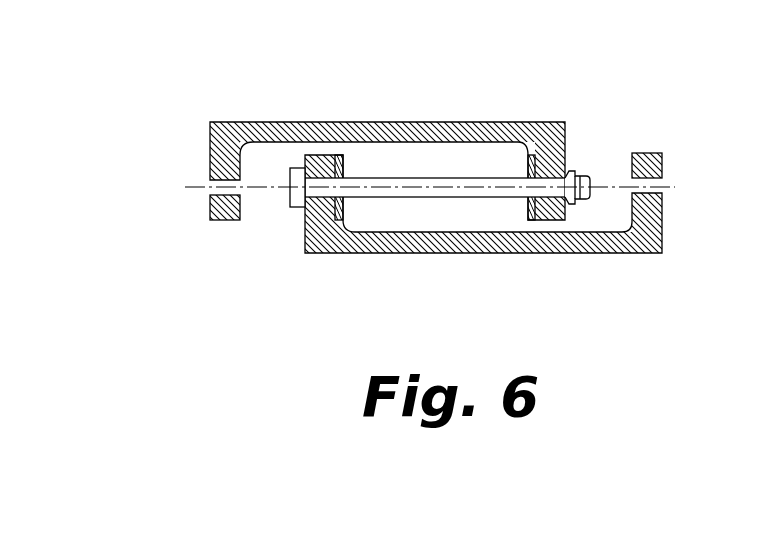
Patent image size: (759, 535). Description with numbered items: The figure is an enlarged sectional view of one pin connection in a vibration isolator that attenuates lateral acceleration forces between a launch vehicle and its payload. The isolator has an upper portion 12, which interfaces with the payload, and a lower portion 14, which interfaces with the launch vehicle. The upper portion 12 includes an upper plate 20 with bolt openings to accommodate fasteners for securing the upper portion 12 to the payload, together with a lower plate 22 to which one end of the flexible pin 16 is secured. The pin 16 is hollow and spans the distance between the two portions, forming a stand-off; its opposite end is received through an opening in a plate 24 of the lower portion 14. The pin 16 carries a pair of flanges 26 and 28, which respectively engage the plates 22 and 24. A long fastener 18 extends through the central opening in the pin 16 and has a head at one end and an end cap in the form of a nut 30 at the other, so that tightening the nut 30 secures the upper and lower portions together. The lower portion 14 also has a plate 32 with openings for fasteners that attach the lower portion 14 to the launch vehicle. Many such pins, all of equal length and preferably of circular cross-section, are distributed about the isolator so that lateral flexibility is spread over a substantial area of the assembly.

The upper portion 12 is at (595, 242).
The lower portion 14 is at (363, 128).
The flexible pin 16 is at (423, 177).
The fastener 18 is at (336, 205).
The upper plate 20 is at (662, 232).
The lower plate 22 is at (310, 222).
The plate 24 is at (553, 150).
The flange 26 is at (346, 157).
The flange 28 is at (528, 162).
The nut 30 is at (583, 172).
The plate 32 is at (215, 140).